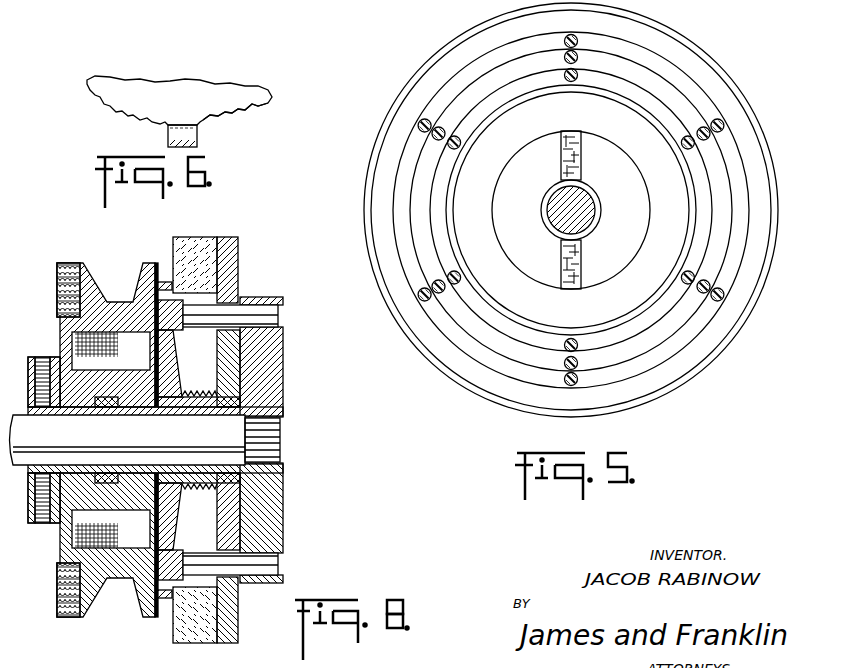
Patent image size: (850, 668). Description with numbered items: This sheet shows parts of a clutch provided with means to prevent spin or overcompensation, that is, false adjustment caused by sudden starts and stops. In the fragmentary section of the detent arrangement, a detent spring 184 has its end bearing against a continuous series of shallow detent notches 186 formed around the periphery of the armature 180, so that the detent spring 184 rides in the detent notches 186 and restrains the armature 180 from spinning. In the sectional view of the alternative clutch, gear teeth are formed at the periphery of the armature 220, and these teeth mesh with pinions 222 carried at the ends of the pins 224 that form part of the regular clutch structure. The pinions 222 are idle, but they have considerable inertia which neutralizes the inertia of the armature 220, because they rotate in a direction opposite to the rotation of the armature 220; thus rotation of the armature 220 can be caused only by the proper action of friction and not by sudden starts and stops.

In FIG. 6, the armature 180 is at (228, 93).
In FIG. 6, the detent spring 184 is at (194, 137).
In FIG. 6, the detent notches 186 is at (240, 113).
In FIG. 8, the armature 220 is at (169, 354).
In FIG. 8, the pinions 222 is at (167, 296).
In FIG. 8, the pins 224 is at (270, 312).